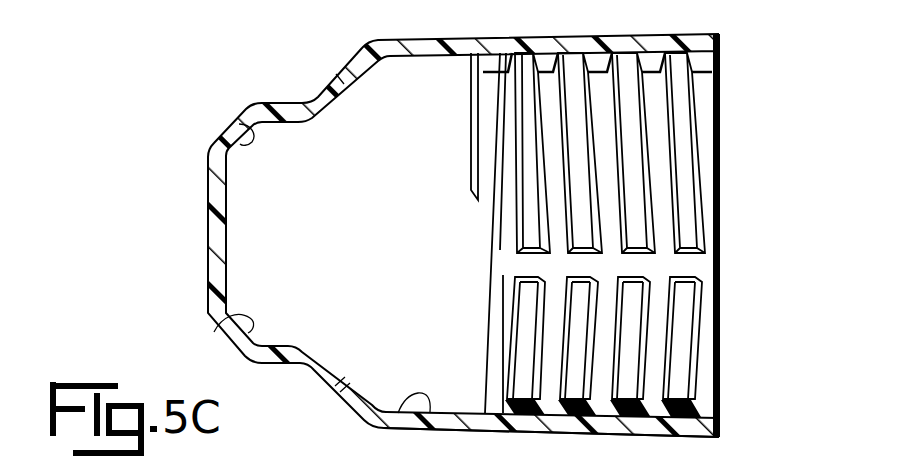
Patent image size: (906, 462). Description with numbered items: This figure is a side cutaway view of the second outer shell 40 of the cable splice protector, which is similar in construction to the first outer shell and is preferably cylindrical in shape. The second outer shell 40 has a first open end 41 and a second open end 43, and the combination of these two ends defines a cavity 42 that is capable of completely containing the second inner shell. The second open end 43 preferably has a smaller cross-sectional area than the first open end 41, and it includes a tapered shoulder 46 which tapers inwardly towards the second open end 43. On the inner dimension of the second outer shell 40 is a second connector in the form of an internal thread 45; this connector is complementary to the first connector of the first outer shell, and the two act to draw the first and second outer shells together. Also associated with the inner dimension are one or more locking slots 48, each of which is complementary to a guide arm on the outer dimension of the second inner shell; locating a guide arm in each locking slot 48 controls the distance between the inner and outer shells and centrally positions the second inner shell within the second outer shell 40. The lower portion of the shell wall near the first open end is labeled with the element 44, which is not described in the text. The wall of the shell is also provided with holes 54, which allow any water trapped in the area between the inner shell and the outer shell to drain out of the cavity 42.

The second outer shell 40 is at (372, 41).
The first open end 41 is at (713, 217).
The cavity 42 is at (293, 179).
The second open end 43 is at (207, 240).
The bottom wall 44 is at (390, 417).
The internal thread 45 is at (678, 60).
The tapered shoulder 46 is at (242, 114).
The locking slot 48 is at (698, 263).
The holes 54 is at (335, 78).